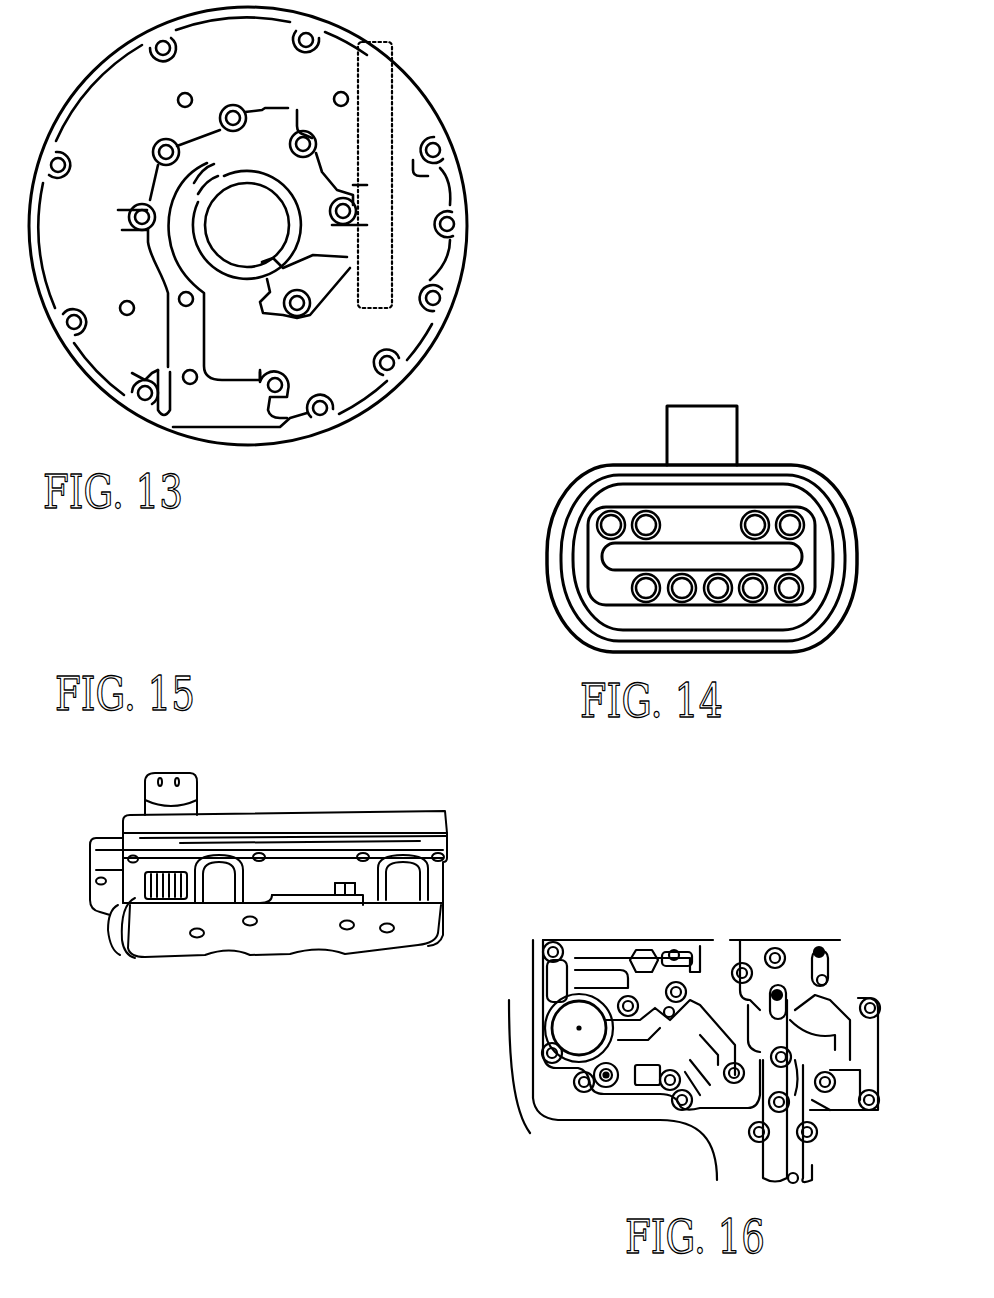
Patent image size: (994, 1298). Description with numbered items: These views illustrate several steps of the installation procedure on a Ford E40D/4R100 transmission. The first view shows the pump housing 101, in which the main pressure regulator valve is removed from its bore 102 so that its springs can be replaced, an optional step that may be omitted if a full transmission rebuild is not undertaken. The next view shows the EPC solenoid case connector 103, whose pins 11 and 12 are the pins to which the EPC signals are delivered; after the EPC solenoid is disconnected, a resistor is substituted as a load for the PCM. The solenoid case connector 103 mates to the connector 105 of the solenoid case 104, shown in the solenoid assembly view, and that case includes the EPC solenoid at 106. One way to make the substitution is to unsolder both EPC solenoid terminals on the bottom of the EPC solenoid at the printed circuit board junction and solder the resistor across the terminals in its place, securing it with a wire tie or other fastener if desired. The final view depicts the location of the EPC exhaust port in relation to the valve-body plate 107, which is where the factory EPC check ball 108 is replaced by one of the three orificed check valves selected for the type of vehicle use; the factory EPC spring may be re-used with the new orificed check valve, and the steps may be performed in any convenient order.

In FIG. 13, the pump housing 101 is at (505, 226).
In FIG. 13, the bore 102 is at (378, 128).
In FIG. 14, the EPC solenoid case connector 103 is at (514, 515).
In FIG. 14, the pin 11 is at (756, 512).
In FIG. 14, the pin 12 is at (791, 512).
In FIG. 15, the solenoid case 104 is at (291, 997).
In FIG. 15, the connector 105 is at (222, 780).
In FIG. 15, the EPC solenoid 106 is at (114, 968).
In FIG. 16, the valve body plate 107 is at (735, 893).
In FIG. 16, the bolt hole 108 is at (590, 1090).